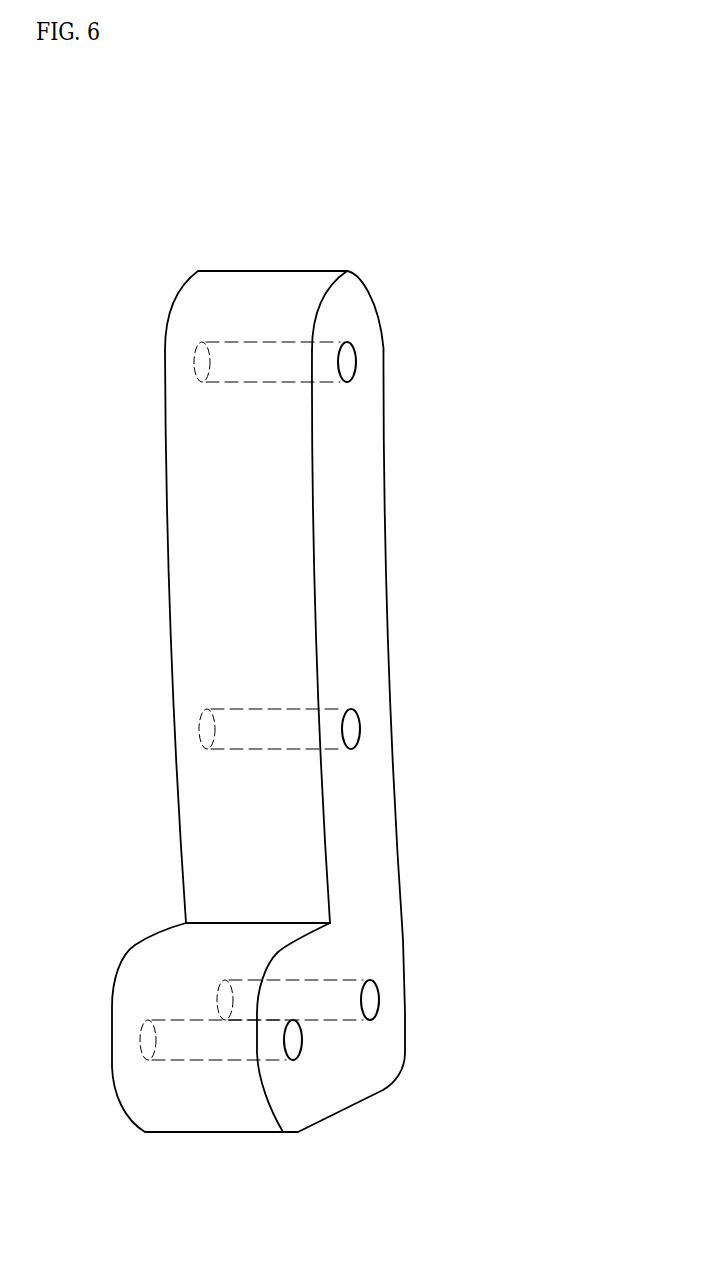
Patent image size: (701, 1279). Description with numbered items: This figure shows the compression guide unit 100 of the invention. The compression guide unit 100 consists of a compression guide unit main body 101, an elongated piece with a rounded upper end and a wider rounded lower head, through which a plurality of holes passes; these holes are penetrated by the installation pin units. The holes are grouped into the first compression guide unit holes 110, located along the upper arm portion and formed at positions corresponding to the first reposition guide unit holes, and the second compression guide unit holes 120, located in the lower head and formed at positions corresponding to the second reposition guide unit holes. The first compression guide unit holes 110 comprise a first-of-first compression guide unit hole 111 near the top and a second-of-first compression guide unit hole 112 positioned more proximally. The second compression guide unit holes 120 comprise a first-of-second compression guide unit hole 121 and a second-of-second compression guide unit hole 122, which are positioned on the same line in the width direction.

The compression guide unit 100 is at (384, 268).
The compression guide unit main body 101 is at (188, 564).
The first compression guide unit holes 110 is at (528, 352).
The first-of-first compression guide unit hole 111 is at (349, 365).
The second-of-first compression guide unit hole 112 is at (353, 730).
The second compression guide unit holes 120 is at (528, 980).
The first-of-second compression guide unit hole 121 is at (372, 1001).
The second-of-second compression guide unit hole 122 is at (295, 1041).